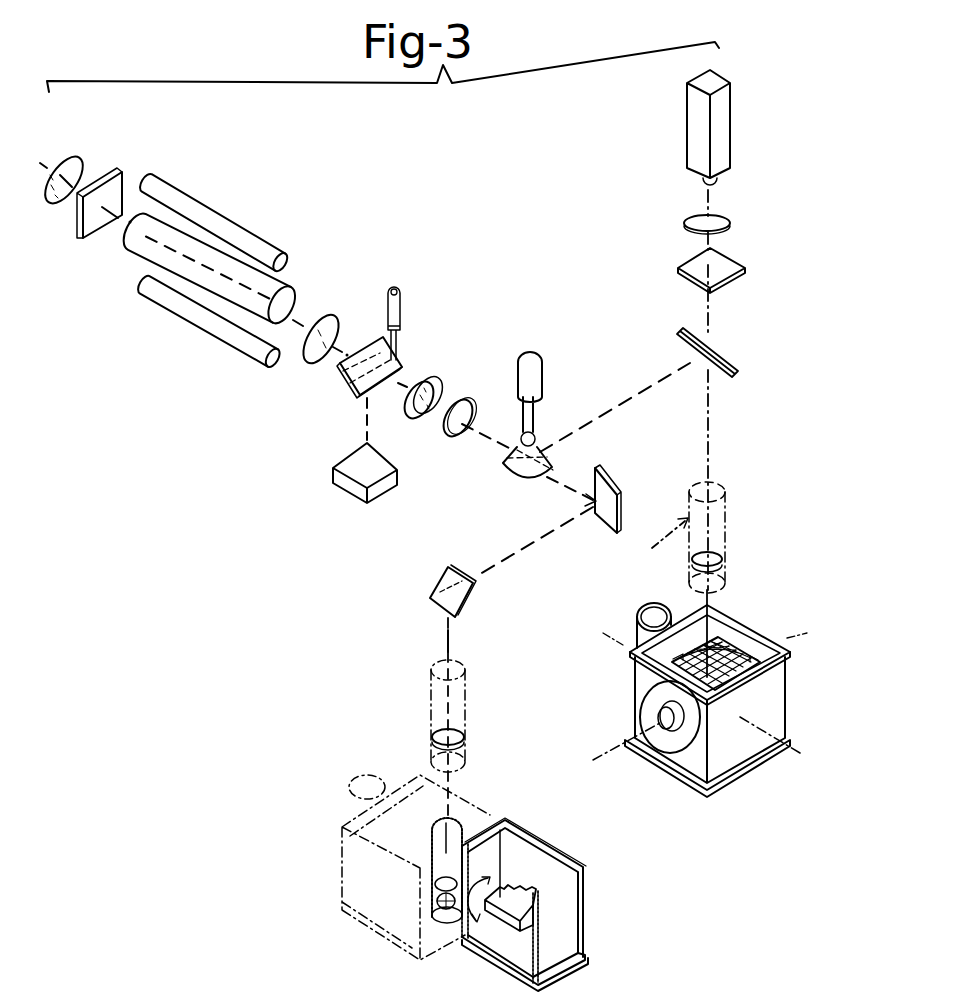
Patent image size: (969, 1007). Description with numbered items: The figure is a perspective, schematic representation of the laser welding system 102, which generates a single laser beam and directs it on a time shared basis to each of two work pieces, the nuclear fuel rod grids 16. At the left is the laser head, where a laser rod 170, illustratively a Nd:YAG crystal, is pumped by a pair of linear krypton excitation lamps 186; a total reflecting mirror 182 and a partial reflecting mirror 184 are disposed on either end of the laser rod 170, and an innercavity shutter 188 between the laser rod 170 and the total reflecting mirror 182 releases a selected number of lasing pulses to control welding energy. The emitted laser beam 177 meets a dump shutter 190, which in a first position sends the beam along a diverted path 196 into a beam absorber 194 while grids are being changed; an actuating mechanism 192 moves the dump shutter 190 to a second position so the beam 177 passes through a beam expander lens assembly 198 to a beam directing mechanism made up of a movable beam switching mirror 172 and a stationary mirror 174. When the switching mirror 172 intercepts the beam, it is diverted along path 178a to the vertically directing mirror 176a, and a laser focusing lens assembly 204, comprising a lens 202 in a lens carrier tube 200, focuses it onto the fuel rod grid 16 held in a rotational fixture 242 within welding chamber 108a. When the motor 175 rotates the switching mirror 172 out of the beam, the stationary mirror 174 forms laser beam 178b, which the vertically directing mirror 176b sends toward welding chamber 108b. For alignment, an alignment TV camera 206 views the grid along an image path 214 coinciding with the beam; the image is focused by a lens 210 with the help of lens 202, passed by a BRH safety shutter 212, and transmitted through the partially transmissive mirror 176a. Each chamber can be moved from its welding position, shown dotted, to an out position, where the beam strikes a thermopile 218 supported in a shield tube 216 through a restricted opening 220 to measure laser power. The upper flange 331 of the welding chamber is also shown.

The laser welding system 102 is at (172, 494).
The total reflecting mirror 182 is at (82, 163).
The innercavity shutter 188 is at (83, 238).
The excitation lamps 186 is at (232, 222).
The laser rod 170 is at (282, 297).
The partial reflecting mirror 184 is at (334, 318).
The laser beam 177 is at (303, 328).
The actuating mechanism 192 is at (403, 312).
The dump shutter 190 is at (403, 358).
The diverted path 196 is at (367, 423).
The beam absorber 194 is at (350, 487).
The beam expander lens assembly 198 is at (452, 457).
The motor 175 is at (530, 350).
The beam switching mirror 172 is at (527, 478).
The stationary mirror 174 is at (612, 485).
The laser beam path 178a is at (637, 393).
The vertically directing mirror 176a is at (727, 362).
The alignment TV camera 206 is at (725, 137).
The image path 214 is at (708, 313).
The lens 210 is at (722, 215).
The BRH shutter 212 is at (735, 262).
The lens carrier tube 200 is at (727, 490).
The lens 202 is at (713, 552).
The laser focusing lens assembly 204 is at (655, 546).
The welding chamber 108a is at (633, 690).
The fuel rod grid 16 is at (728, 652).
The shield tube 216 is at (638, 612).
The restricted opening 220 is at (430, 887).
The vertically directing mirror 176b is at (438, 577).
The laser beam path 178b is at (527, 562).
The thermopile 218 is at (432, 912).
The welding chamber 108b is at (577, 915).
The upper flange 331 is at (540, 842).
The rotational fixture 242 is at (488, 922).